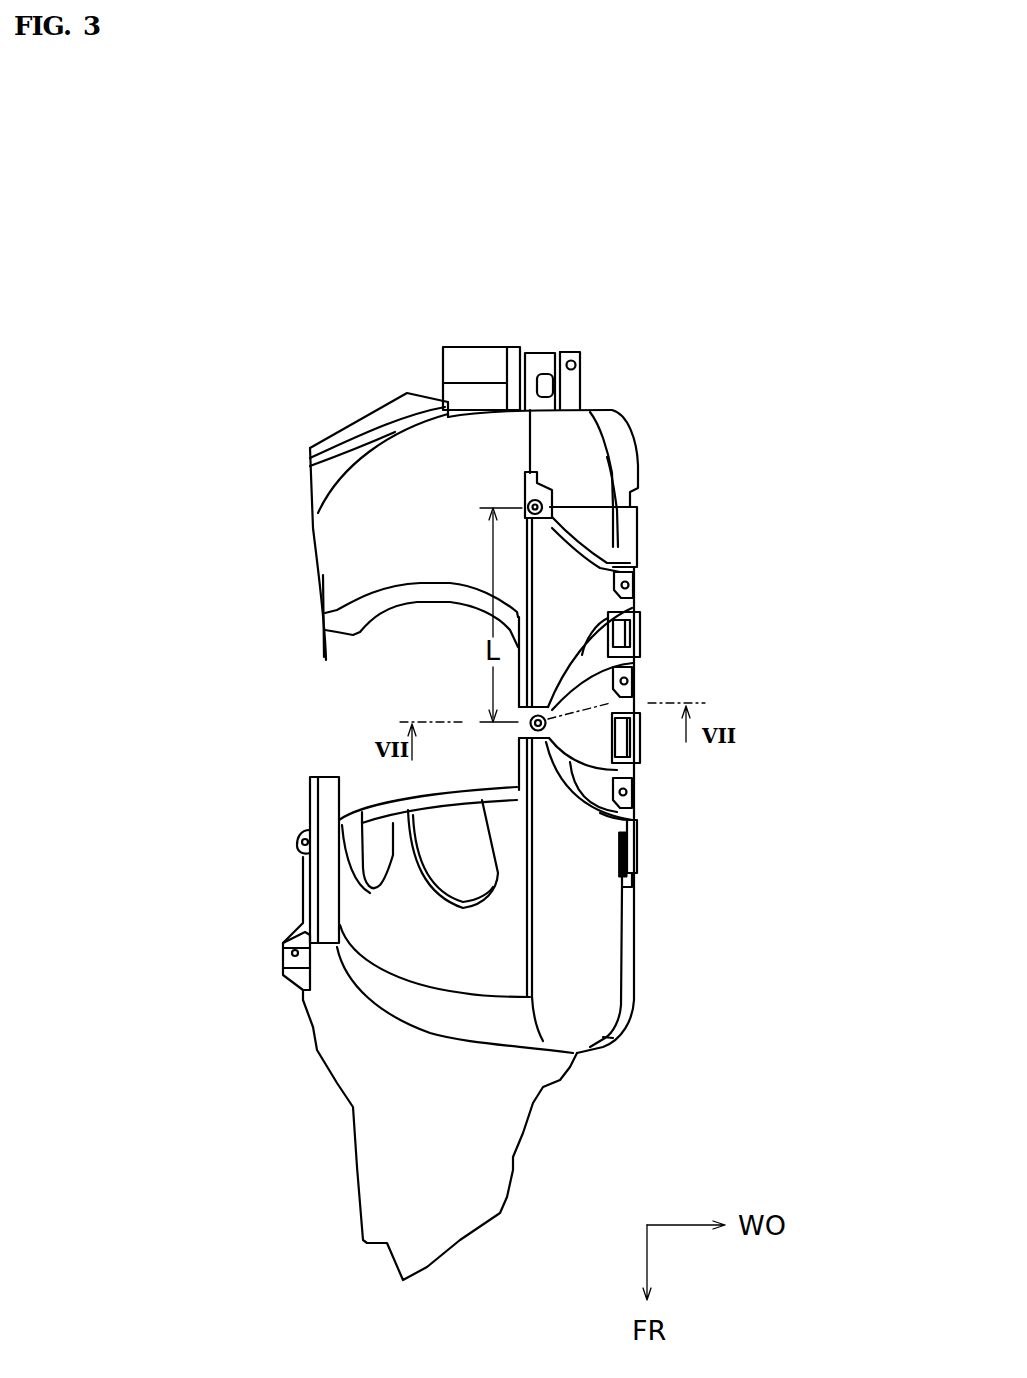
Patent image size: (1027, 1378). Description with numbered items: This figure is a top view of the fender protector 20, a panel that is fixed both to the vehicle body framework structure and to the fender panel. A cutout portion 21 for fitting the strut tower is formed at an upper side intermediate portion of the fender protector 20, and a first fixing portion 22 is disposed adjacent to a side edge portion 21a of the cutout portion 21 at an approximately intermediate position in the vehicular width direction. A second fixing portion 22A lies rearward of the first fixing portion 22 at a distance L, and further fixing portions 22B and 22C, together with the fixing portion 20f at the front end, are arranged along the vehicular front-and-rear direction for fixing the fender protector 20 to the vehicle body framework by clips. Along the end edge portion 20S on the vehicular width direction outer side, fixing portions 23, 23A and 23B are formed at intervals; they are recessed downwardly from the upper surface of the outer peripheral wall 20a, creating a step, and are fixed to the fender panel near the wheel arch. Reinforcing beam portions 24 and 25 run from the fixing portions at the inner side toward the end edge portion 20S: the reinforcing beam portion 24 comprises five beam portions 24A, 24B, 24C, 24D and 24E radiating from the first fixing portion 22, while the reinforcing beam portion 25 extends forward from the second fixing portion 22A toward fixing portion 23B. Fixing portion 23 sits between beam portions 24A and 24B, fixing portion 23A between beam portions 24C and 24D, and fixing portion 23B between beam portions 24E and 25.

The fender protector 20 is at (667, 393).
The fixing portion 20f is at (549, 365).
The outer peripheral wall 20a is at (592, 860).
The end edge portion 20S is at (624, 910).
The cutout portion 21 is at (428, 603).
The side edge portion 21a is at (517, 667).
The first fixing portion 22 is at (517, 758).
The second fixing portion 22A is at (528, 497).
The fixing portion 22B is at (283, 958).
The fixing portion 22C is at (297, 843).
The fixing portion 23 is at (636, 790).
The fixing portion 23A is at (637, 672).
The fixing portion 23B is at (636, 577).
The reinforcing beam portion 24 is at (813, 585).
The reinforcing beam portion 24A is at (635, 812).
The reinforcing beam portion 24B is at (637, 770).
The reinforcing beam portion 24C is at (640, 695).
The reinforcing beam portion 24D is at (640, 660).
The reinforcing beam portion 24E is at (640, 603).
The reinforcing beam portion 25 is at (597, 557).